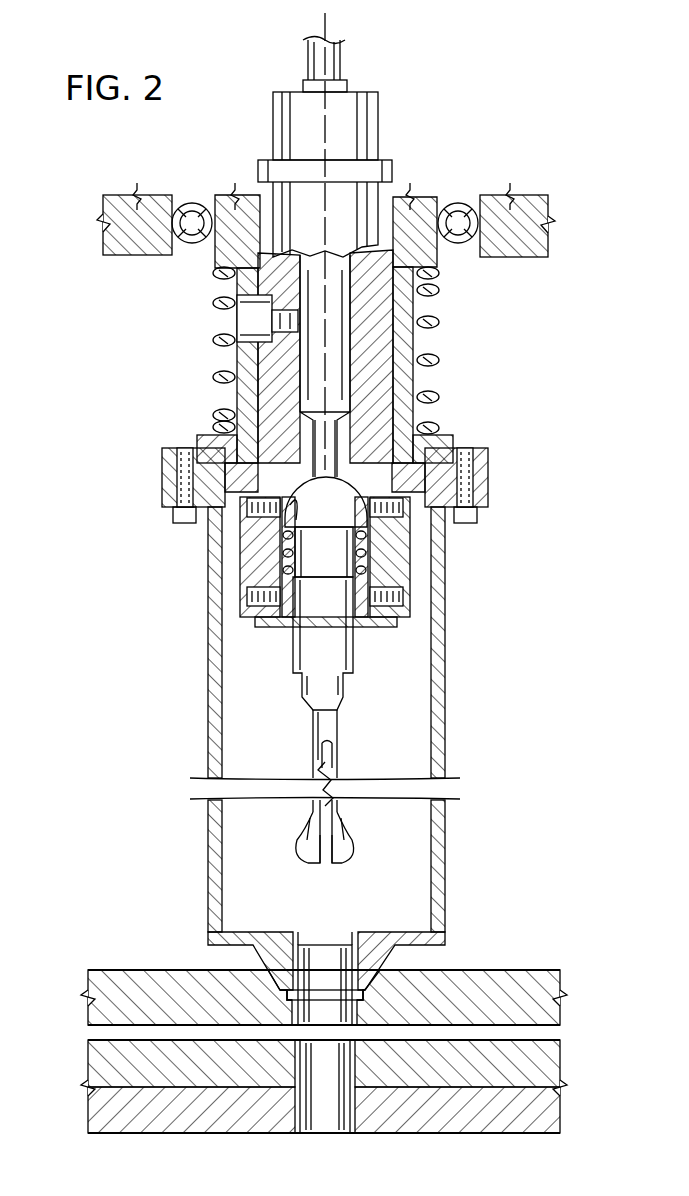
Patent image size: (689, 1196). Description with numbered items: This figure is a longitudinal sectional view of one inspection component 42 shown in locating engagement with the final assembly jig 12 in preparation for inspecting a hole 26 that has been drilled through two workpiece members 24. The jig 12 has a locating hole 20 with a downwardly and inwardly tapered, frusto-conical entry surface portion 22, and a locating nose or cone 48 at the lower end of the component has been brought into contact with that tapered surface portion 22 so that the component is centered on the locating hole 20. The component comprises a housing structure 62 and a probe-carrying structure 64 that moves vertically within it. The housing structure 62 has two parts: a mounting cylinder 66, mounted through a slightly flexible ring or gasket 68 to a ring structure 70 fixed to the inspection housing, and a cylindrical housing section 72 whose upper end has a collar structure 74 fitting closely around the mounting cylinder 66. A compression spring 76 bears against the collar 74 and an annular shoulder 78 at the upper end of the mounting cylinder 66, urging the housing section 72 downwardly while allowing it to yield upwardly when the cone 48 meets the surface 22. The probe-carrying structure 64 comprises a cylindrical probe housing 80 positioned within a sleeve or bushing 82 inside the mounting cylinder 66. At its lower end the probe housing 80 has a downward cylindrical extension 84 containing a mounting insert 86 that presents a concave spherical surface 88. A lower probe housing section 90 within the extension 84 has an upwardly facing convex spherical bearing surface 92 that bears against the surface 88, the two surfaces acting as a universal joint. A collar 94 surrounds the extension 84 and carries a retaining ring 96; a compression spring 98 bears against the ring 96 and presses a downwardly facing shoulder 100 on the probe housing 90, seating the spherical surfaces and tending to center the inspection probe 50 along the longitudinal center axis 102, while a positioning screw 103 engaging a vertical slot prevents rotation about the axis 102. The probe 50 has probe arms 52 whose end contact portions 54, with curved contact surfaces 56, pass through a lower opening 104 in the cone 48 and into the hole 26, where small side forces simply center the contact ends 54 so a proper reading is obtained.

The longitudinal center axis 102 is at (327, 25).
The probe housing 80 is at (392, 170).
The probe-carrying structure 64 is at (432, 184).
The ring structure 70 is at (525, 240).
The flexible ring or gasket 68 is at (465, 243).
The annular shoulder 78 is at (420, 300).
The mounting cylinder 66 is at (385, 322).
The cylindrical sleeve or bushing 82 is at (418, 372).
The compression spring 76 is at (385, 395).
The mounting insert 86 is at (422, 418).
The collar structure 74 is at (445, 447).
The inspection component 42 is at (173, 363).
The convex spherical bearing surface 92 is at (292, 465).
The positioning screw 103 is at (252, 507).
The concave spherical surface 88 is at (282, 555).
The downward cylindrical extension 84 is at (362, 522).
The downwardly facing shoulder 100 is at (345, 538).
The compression spring 98 is at (380, 558).
The collar 94 is at (400, 577).
The retaining ring 96 is at (383, 628).
The lower probe housing section 90 is at (343, 660).
The housing structure 62 is at (452, 693).
The cylindrical housing section 72 is at (440, 737).
The inspection probe 50 is at (343, 758).
The probe arms 52 is at (337, 770).
The end contact portions 54 is at (353, 840).
The curved contact surface 56 is at (363, 843).
The lower opening 104 is at (347, 957).
The locating hole 20 is at (357, 1013).
The tapered entry surface portion 22 is at (367, 1000).
The locating nose or cone 48 is at (370, 987).
The final assembly jig 12 is at (513, 978).
The members 24 is at (413, 1077).
The hole 26 is at (300, 1110).